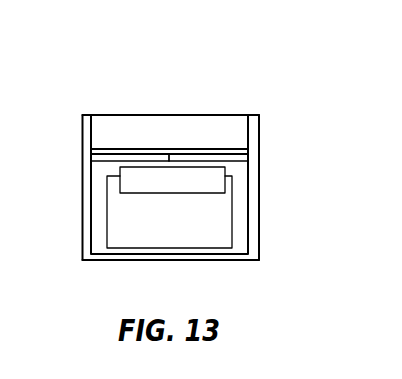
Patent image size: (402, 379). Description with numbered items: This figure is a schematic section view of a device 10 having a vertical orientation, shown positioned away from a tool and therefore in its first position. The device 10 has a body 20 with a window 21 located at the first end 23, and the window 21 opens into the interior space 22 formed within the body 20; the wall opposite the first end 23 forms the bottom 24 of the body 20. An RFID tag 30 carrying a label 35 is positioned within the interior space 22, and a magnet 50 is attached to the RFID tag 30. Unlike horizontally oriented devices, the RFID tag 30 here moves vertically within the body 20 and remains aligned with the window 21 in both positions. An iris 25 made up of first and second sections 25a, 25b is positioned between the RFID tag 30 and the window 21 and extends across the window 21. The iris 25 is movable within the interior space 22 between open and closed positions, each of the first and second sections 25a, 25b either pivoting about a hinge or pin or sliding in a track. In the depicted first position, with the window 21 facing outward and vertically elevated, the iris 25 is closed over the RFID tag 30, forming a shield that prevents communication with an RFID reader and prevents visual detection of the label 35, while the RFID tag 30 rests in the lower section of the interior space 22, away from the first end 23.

The device 10 is at (135, 70).
The body 20 is at (259, 197).
The window 21 is at (182, 100).
The interior space 22 is at (237, 229).
The first end 23 is at (83, 116).
The bottom wall 24 is at (218, 262).
The iris 25 is at (115, 152).
The first section 25a is at (91, 148).
The second section 25b is at (241, 159).
The RFID tag 30 is at (150, 182).
The label 35 is at (197, 166).
The magnet 50 is at (137, 225).